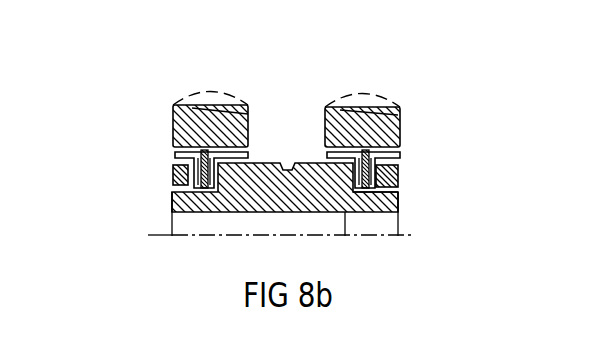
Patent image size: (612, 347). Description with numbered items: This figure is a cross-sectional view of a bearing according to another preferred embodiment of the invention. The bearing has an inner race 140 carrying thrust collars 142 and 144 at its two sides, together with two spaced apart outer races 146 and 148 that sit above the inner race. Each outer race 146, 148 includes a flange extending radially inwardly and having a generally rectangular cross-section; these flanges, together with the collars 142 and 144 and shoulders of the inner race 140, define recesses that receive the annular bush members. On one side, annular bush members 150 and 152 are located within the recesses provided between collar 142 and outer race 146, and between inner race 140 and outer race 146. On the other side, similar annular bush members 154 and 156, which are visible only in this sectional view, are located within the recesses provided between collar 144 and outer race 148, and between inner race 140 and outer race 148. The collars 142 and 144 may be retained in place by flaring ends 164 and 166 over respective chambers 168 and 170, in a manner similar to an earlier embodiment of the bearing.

The inner race 140 is at (345, 236).
The thrust collar 142 is at (398, 172).
The thrust collar 144 is at (171, 169).
The outer race 146 is at (402, 122).
The outer race 148 is at (173, 113).
The annular bush member 150 is at (400, 155).
The annular bush member 152 is at (327, 154).
The annular bush member 154 is at (174, 153).
The annular bush member 156 is at (250, 152).
The flaring end 164 is at (150, 236).
The flaring end 166 is at (398, 200).
The chamber 168 is at (171, 193).
The chamber 170 is at (398, 191).